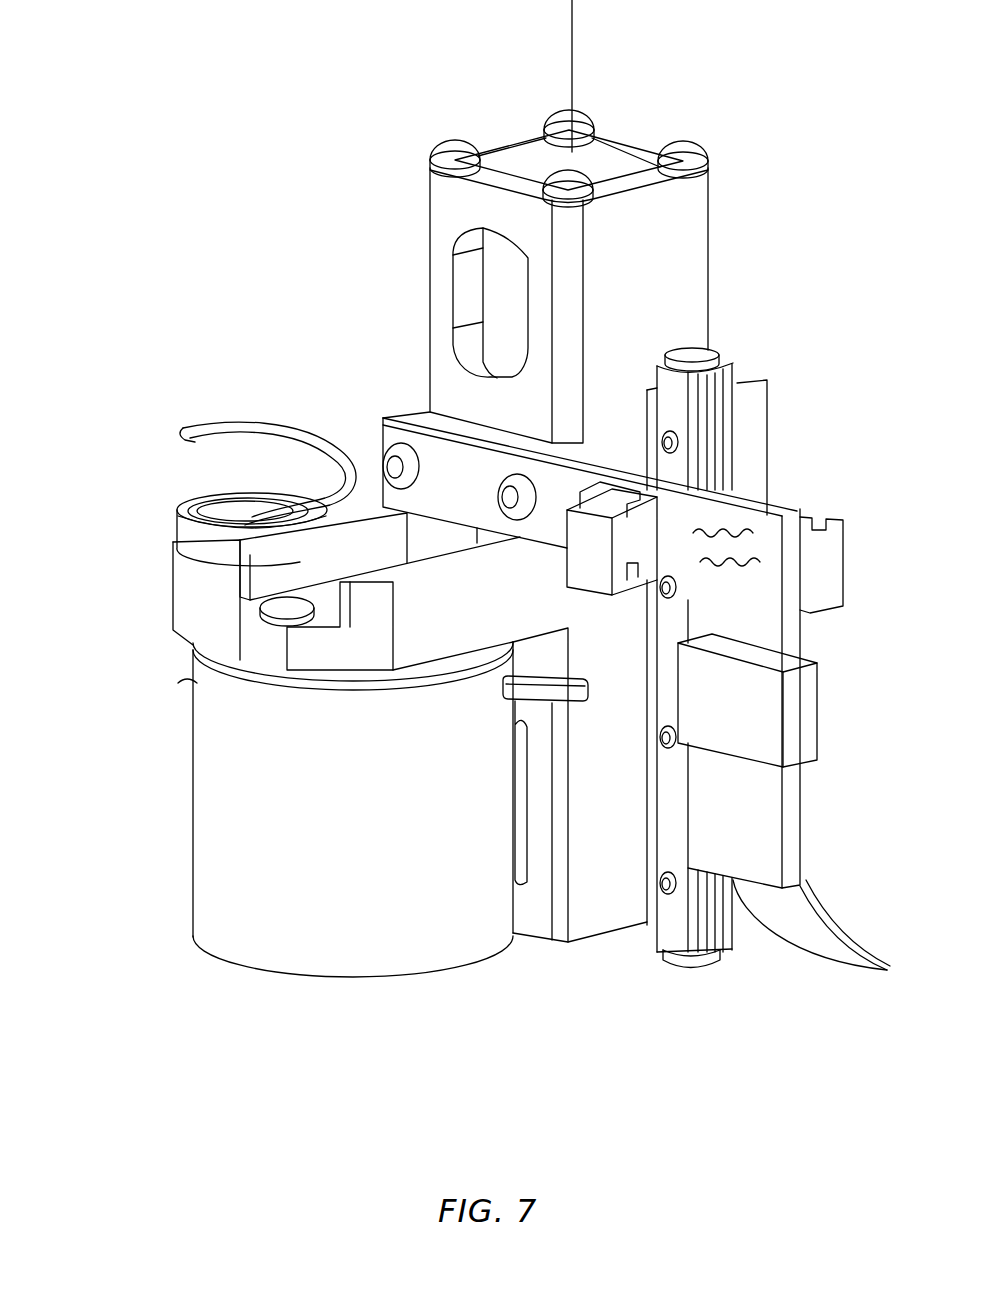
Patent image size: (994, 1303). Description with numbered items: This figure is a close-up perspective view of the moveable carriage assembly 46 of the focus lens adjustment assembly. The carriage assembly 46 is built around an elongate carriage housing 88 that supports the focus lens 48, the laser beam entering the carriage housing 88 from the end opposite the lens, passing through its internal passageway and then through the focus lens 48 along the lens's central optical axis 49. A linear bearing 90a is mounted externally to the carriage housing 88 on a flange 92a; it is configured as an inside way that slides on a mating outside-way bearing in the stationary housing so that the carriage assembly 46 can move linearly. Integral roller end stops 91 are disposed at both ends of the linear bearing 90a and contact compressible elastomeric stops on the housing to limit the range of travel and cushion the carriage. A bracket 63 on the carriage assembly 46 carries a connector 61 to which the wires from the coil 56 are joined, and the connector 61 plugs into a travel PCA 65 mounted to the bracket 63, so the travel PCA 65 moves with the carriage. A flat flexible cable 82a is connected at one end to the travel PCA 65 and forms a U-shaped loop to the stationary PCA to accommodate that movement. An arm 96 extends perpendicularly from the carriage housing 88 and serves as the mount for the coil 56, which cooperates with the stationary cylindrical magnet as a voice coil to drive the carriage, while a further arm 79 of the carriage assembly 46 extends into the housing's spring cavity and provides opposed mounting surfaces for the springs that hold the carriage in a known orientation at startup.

The carriage assembly 46 is at (288, 196).
The focus lens 48 is at (500, 162).
The central optical axis 49 is at (574, 45).
The coil 56 is at (233, 822).
The connector 61 is at (650, 517).
The bracket 63 is at (435, 453).
The travel PCA 65 is at (830, 565).
The arm 79 is at (185, 588).
The flat flexible cable 82a is at (822, 947).
The carriage housing 88 is at (690, 245).
The linear bearing 90a is at (730, 365).
The integral roller end stop 91 is at (700, 352).
The flange 92a is at (752, 418).
The arm 96 is at (258, 637).